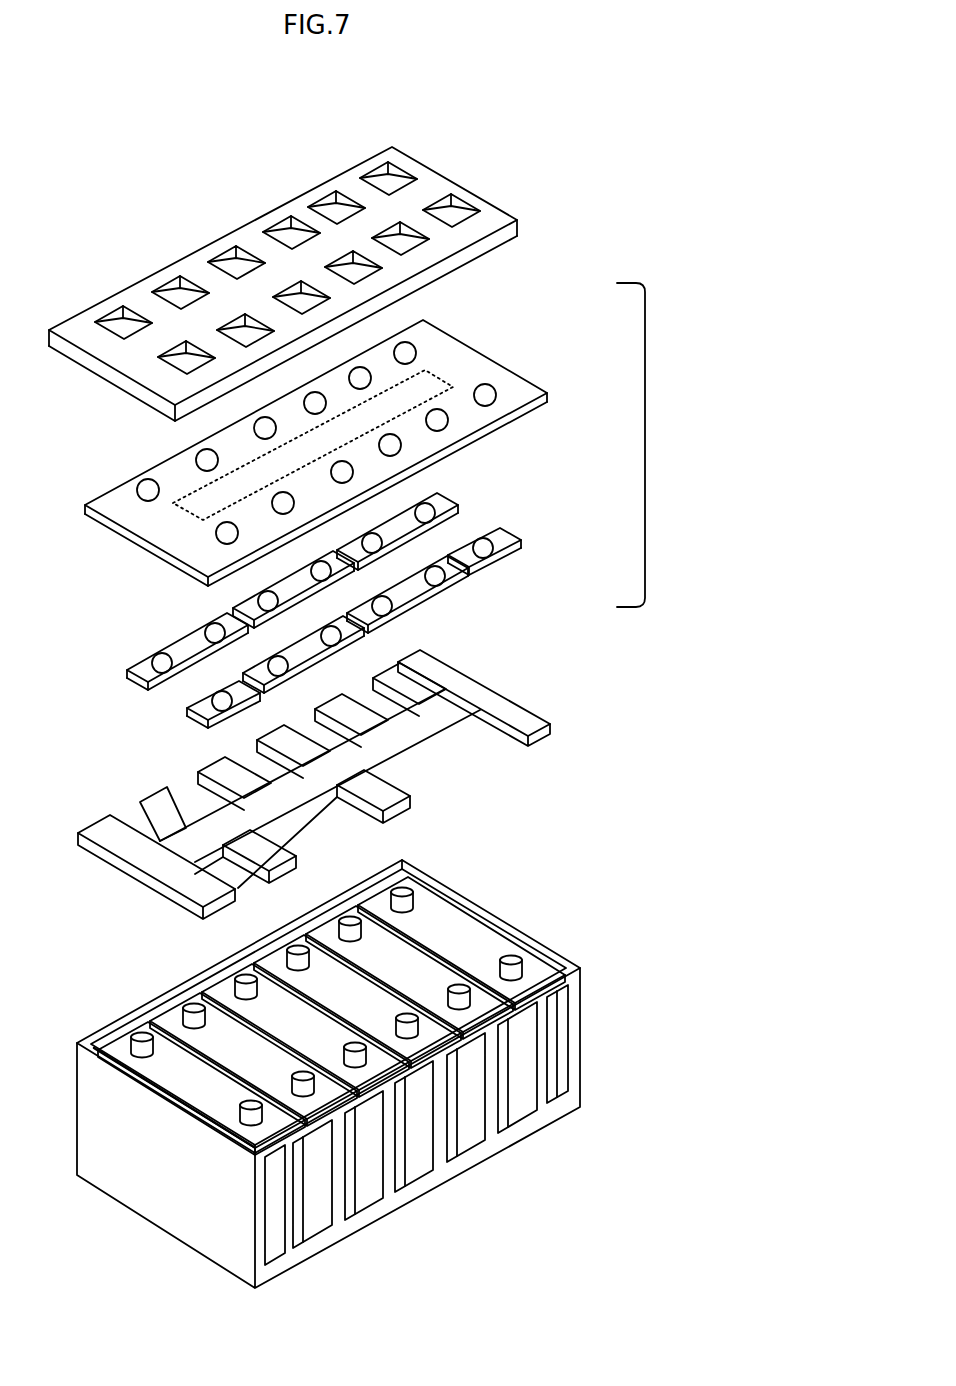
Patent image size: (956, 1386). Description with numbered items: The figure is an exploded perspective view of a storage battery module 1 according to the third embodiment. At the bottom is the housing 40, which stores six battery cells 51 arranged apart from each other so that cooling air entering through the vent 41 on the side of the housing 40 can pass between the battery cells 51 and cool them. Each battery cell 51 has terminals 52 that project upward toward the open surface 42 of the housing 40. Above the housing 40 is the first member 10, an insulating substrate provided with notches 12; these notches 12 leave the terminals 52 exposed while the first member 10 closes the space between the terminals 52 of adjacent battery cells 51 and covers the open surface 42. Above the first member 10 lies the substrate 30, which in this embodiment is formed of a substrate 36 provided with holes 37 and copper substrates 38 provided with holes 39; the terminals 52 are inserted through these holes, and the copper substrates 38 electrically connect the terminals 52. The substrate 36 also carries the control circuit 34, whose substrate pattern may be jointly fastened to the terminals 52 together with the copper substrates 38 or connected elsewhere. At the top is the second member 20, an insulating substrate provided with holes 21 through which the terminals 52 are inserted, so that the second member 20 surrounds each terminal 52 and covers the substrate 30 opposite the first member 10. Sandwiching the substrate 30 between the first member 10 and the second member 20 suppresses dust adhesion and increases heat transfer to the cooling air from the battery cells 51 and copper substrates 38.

The storage battery module 1 is at (279, 181).
The first member 10 is at (544, 721).
The notches 12 is at (520, 751).
The second member 20 is at (517, 224).
The holes 21 is at (388, 168).
The substrate 30 is at (645, 455).
The control circuit 34 is at (437, 377).
The substrate 36 is at (548, 393).
The holes 37 is at (407, 345).
The copper substrates 38 is at (453, 578).
The holes 39 is at (382, 607).
The housing 40 is at (582, 970).
The vent 41 is at (573, 1036).
The open surface 42 is at (520, 920).
The battery cells 51 is at (440, 916).
The terminals 52 is at (406, 893).